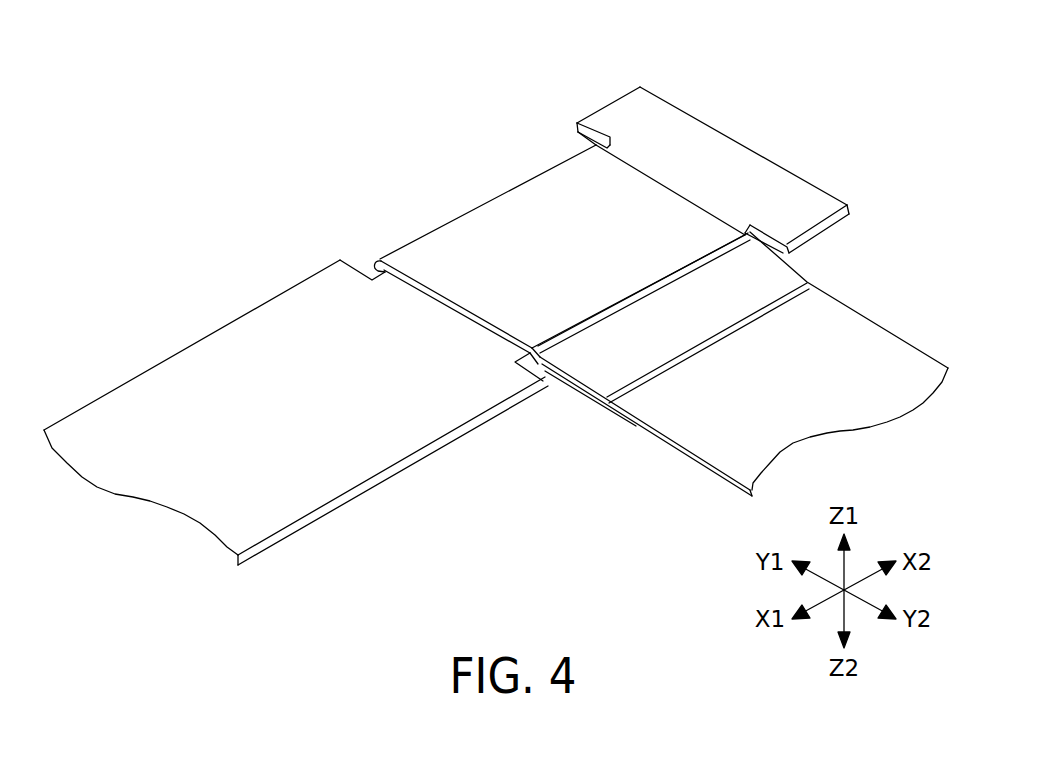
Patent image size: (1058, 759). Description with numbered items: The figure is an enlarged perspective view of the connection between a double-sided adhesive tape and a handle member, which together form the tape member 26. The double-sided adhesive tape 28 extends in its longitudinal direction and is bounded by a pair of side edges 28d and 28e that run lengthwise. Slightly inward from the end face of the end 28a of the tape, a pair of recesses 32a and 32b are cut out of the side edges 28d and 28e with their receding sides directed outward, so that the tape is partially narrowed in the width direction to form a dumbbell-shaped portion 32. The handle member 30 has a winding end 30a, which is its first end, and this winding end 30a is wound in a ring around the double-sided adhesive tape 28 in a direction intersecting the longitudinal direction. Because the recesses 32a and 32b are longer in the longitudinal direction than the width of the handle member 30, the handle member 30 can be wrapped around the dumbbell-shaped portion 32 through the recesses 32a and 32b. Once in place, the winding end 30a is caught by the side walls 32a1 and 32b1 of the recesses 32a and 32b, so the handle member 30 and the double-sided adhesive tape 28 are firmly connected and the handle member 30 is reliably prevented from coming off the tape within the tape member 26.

The tape member 26 is at (128, 83).
The double-sided adhesive tape 28 is at (296, 413).
The end 28a is at (683, 143).
The side edge 28d is at (137, 377).
The side edge 28e is at (403, 468).
The handle member 30 is at (713, 289).
The winding end 30a is at (545, 193).
The dumbbell-shaped portion 32 is at (563, 262).
The recess 32a is at (381, 260).
The side wall 32a1 is at (356, 260).
The recess 32b is at (753, 223).
The side wall 32b1 is at (770, 238).